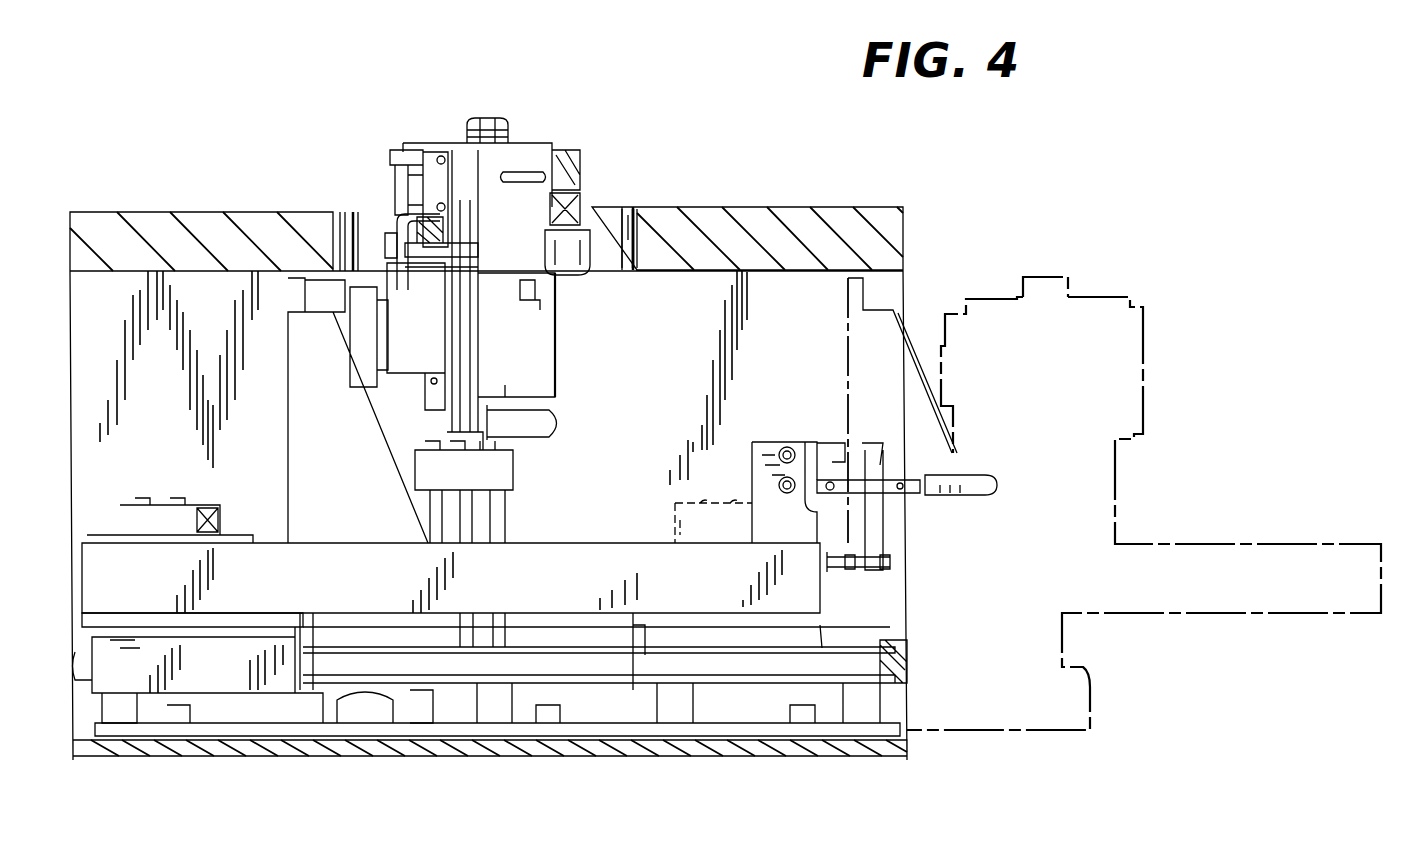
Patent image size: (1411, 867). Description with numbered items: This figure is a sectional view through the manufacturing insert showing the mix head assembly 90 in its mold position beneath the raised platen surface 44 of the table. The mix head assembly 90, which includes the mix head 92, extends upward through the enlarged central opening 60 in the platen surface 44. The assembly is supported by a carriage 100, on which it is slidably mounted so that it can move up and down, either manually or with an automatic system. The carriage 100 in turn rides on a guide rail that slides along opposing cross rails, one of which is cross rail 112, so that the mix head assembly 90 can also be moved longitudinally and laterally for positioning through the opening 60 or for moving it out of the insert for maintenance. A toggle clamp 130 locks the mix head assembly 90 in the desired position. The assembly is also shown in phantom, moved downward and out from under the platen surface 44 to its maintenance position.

The platen surface 44 is at (746, 222).
The enlarged central opening 60 is at (616, 205).
The mix head assembly 90 is at (535, 142).
The mix head 92 is at (488, 118).
The carriage 100 is at (290, 448).
The cross rail 112 is at (825, 660).
The toggle clamp 130 is at (990, 476).